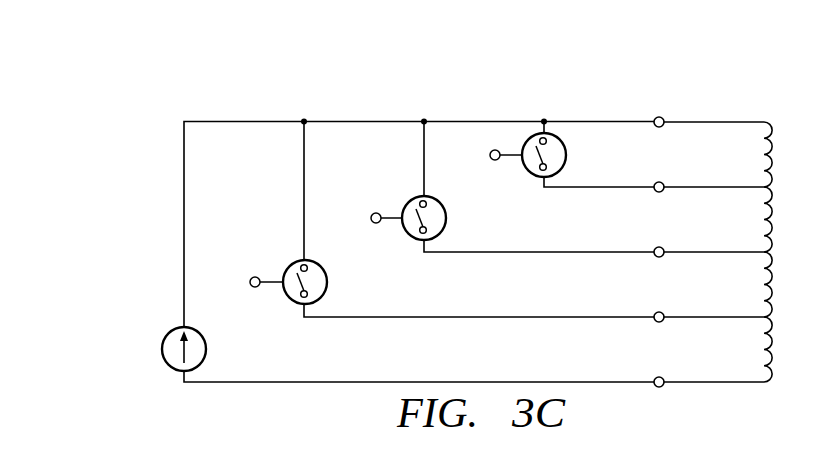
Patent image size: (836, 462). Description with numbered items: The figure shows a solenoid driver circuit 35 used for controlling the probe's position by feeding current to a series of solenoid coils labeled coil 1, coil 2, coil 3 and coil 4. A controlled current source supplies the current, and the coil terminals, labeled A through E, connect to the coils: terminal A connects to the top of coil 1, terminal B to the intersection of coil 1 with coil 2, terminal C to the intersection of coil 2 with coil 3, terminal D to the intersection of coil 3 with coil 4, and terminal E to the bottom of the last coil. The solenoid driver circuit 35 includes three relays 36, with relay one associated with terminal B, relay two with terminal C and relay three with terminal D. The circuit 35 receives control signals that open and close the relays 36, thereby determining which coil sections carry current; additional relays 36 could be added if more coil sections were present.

The solenoid driver circuit 35 is at (420, 205).
The relay 36 is at (407, 219).
The coil 1 is at (778, 154).
The coil 2 is at (778, 219).
The coil 3 is at (778, 284).
The coil 4 is at (779, 349).